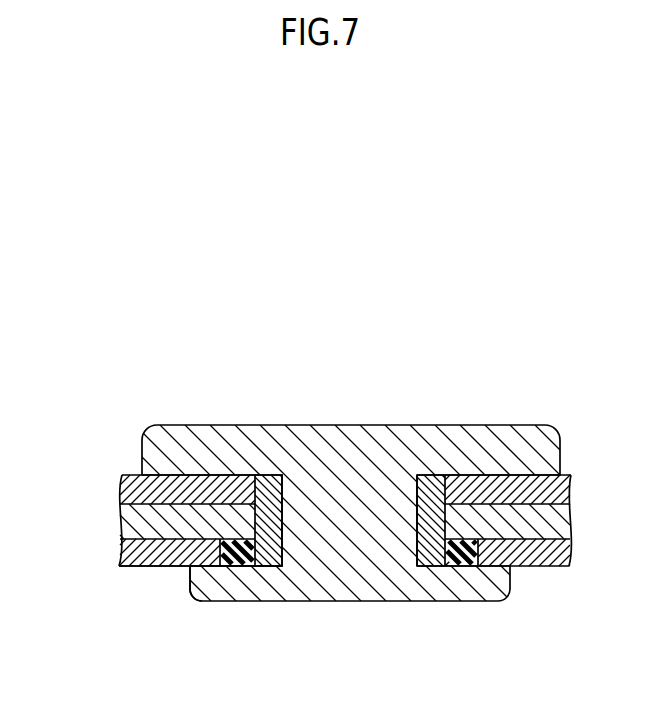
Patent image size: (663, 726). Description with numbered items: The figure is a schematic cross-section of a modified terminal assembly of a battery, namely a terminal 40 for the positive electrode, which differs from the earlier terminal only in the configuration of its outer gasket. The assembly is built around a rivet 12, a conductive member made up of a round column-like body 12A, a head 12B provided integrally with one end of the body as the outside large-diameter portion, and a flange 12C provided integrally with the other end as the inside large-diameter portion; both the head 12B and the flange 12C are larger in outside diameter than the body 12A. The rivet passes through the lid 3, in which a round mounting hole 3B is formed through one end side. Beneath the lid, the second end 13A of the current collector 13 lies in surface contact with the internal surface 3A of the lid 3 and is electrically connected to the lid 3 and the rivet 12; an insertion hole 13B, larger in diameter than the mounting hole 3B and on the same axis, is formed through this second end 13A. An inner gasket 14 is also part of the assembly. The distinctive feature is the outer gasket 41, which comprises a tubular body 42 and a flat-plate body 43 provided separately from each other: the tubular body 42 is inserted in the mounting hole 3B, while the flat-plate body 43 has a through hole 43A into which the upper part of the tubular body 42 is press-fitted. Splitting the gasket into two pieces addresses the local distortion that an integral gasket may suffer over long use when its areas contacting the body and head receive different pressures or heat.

The terminal 40 is at (371, 250).
The rivet 12 is at (373, 317).
The body 12A is at (290, 515).
The head 12B is at (232, 452).
The flange 12C is at (267, 590).
The lid 3 is at (136, 518).
The internal surface 3A is at (143, 546).
The mounting hole 3B is at (256, 520).
The current collector 13 is at (137, 568).
The second end 13A is at (190, 578).
The insertion hole 13B is at (228, 568).
The outer gasket 41 is at (523, 333).
The tubular body 42 is at (420, 513).
The flat-plate body 43 is at (485, 478).
The through hole 43A is at (444, 494).
The inner gasket 14 is at (459, 542).